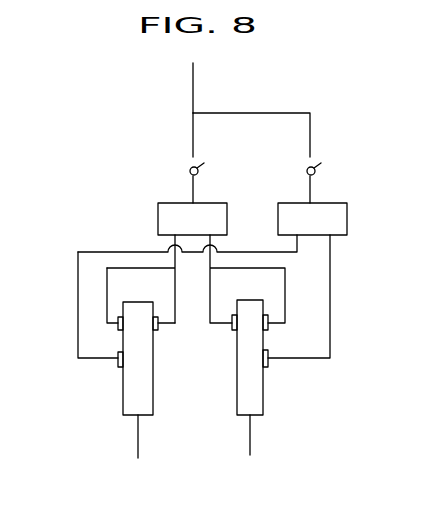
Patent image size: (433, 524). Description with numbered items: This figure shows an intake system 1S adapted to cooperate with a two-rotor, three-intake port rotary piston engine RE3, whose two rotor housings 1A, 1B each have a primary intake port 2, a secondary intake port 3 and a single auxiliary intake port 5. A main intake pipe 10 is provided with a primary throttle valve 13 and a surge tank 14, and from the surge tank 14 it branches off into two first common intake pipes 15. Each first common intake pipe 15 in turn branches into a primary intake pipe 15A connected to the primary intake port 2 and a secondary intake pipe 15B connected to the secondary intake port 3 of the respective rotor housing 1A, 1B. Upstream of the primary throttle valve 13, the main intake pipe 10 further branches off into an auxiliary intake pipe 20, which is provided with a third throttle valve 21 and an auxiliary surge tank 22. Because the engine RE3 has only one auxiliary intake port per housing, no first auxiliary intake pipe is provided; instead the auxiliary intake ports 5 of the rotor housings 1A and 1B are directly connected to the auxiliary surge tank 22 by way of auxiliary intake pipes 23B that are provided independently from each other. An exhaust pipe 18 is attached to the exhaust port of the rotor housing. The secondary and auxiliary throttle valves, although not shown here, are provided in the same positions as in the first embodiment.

The main intake pipe 10 is at (193, 88).
The auxiliary intake pipe 20 is at (263, 113).
The primary throttle valve 13 is at (188, 175).
The third throttle valve 21 is at (316, 168).
The surge tank 14 is at (158, 210).
The auxiliary surge tank 22 is at (347, 218).
The auxiliary intake pipe 23B is at (255, 252).
The switch assembly 1S is at (77, 252).
The secondary intake pipe 15B is at (105, 278).
The first common intake pipe 15 is at (172, 263).
The secondary intake port 3 is at (117, 327).
The auxiliary intake port 5 is at (117, 366).
The rotor housing 1A is at (113, 394).
The primary intake port 2 is at (158, 327).
The primary intake pipe 15A is at (190, 340).
The exhaust pipe 18 is at (138, 437).
The two-rotor, three-intake port rotary piston engine RE3 is at (191, 386).
The rotor housing 1B is at (238, 418).